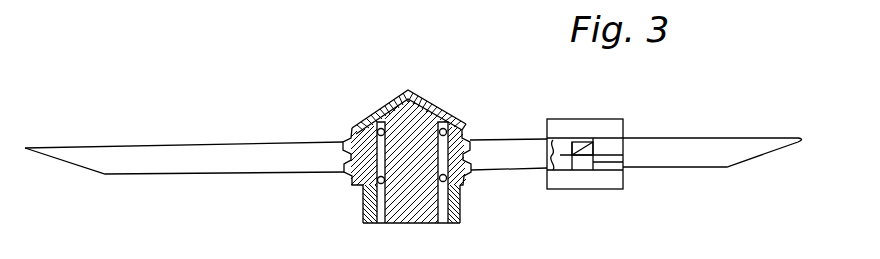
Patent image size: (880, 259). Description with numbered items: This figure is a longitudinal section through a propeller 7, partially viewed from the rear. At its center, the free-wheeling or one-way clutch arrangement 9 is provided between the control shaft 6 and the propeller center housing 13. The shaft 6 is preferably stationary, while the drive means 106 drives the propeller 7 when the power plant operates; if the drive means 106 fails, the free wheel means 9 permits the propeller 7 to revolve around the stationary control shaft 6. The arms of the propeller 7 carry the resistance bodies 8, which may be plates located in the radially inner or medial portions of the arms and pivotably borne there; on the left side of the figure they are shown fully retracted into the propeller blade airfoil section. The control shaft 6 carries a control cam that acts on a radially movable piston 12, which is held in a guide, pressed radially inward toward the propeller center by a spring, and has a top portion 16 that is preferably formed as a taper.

The control shaft 6 is at (402, 200).
The propeller 7 is at (127, 162).
The resistance body 8 is at (612, 128).
The free-wheeling arrangement 9 is at (380, 122).
The piston 12 is at (463, 132).
The propeller center housing 13 is at (352, 132).
The top portion 16 is at (578, 158).
The drive means 106 is at (458, 203).